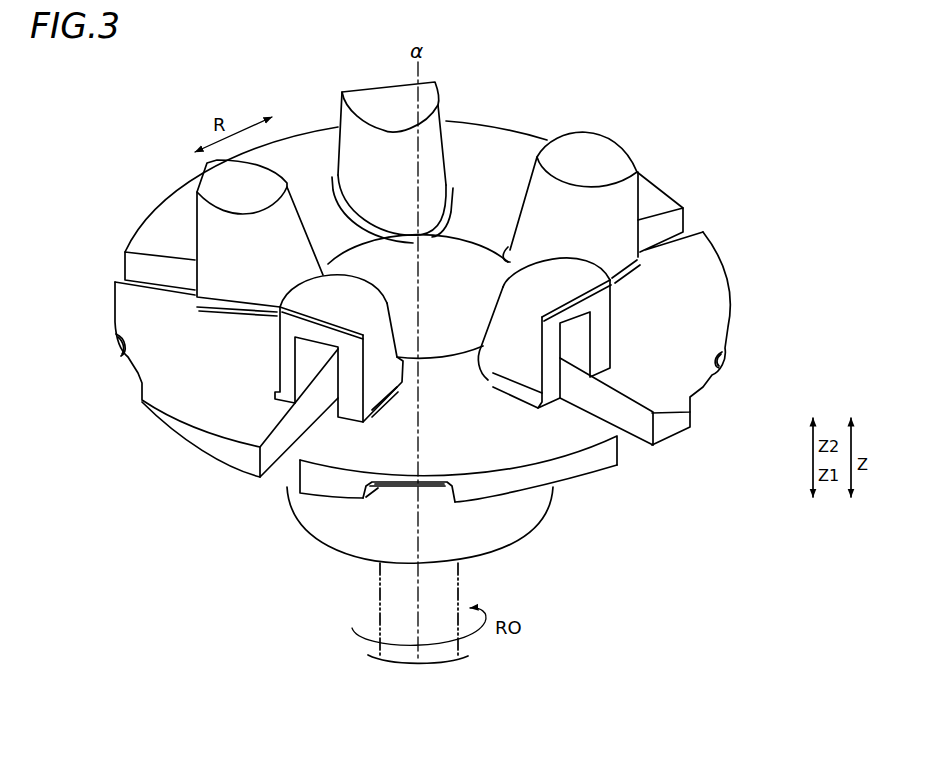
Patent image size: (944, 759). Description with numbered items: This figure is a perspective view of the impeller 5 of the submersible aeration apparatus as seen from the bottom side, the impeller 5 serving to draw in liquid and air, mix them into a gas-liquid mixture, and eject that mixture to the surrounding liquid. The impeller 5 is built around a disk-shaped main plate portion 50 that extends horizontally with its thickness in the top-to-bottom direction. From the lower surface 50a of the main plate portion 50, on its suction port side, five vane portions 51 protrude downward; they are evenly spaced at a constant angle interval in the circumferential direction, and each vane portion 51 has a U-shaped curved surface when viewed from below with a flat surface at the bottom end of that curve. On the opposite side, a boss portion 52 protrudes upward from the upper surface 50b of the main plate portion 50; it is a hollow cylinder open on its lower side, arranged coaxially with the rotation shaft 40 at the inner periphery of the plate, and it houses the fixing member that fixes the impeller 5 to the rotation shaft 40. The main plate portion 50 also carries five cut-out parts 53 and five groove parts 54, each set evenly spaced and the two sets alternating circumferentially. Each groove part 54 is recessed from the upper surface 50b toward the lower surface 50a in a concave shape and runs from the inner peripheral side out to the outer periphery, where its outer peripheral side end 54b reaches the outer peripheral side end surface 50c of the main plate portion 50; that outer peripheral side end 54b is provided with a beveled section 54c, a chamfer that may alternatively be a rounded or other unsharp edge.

The impeller 5 is at (97, 145).
The rotation shaft 40 is at (380, 578).
The main plate portion 50 is at (134, 222).
The lower surface 50a is at (161, 237).
The upper surface 50b is at (182, 440).
The outer peripheral side end surface 50c is at (180, 422).
The vane portion 51 is at (333, 93).
The boss portion 52 is at (548, 514).
The cut-out part 53 is at (139, 262).
The groove part 54 is at (133, 396).
The outer peripheral side end 54b is at (125, 352).
The beveled section 54c is at (418, 487).